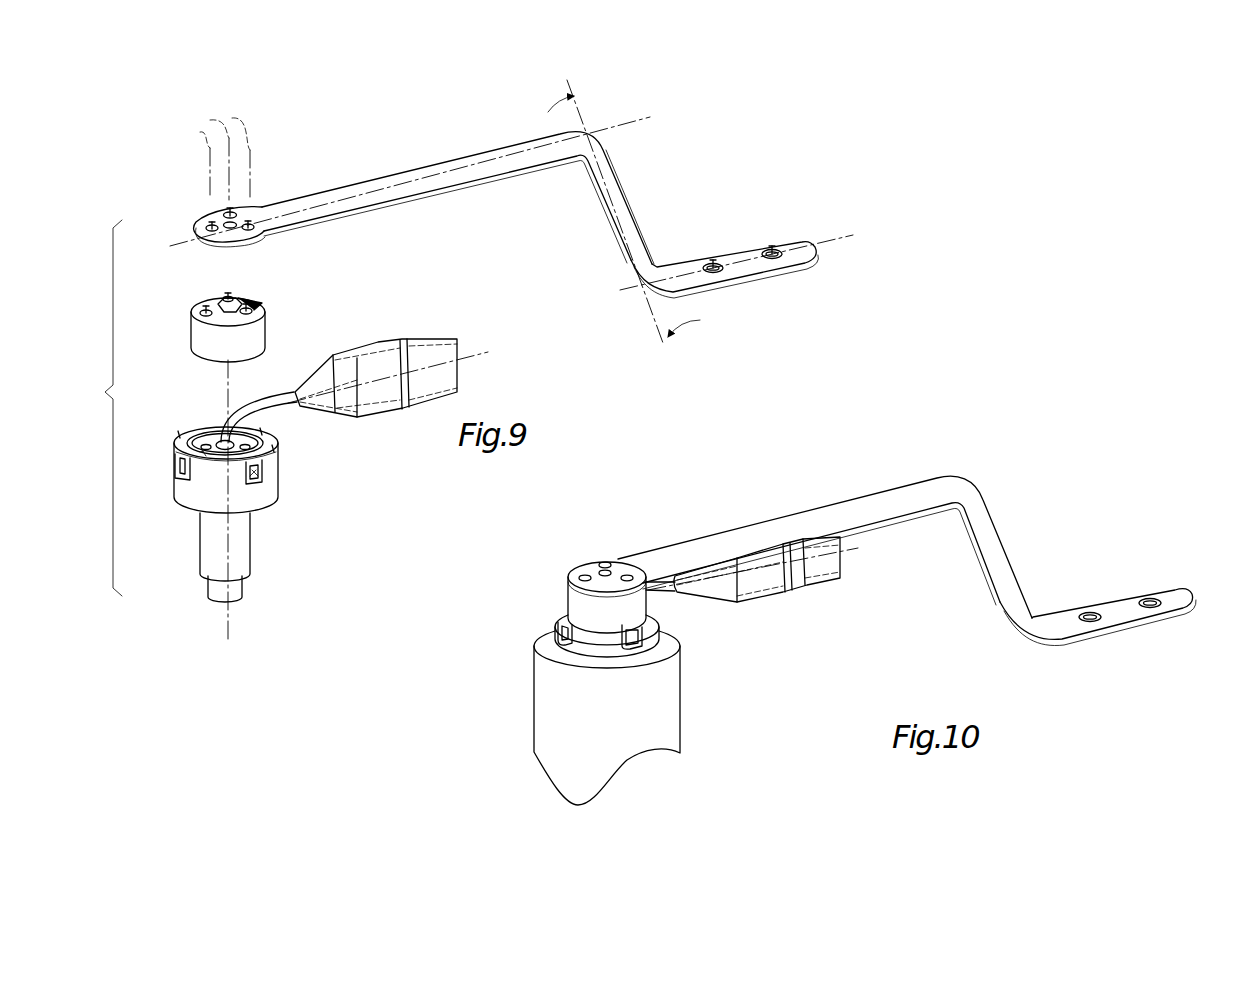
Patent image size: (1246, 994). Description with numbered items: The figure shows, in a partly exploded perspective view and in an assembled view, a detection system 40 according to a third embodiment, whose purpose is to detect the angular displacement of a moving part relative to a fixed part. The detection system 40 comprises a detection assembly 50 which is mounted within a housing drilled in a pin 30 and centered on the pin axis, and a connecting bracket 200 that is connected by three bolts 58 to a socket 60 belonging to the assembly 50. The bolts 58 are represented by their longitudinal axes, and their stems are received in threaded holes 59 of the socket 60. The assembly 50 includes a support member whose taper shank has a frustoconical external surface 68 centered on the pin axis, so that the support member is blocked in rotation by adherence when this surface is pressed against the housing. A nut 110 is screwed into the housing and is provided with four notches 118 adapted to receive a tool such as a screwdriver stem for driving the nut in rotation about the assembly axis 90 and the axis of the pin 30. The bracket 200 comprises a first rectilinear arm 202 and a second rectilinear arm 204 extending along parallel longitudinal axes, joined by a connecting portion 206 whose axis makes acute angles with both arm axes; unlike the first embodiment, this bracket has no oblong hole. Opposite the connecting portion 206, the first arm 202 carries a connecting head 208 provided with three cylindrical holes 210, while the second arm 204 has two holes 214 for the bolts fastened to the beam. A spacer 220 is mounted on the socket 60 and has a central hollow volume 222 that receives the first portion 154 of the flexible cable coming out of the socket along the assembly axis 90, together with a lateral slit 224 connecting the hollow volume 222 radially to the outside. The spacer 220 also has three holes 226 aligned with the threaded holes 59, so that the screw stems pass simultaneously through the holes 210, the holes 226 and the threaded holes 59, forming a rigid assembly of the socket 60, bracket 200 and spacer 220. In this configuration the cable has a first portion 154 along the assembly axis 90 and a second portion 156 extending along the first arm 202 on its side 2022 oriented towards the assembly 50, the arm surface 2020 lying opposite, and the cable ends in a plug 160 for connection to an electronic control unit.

In FIG. 10, the pin 30 is at (567, 729).
In FIG. 9, the detection system 40 is at (100, 408).
In FIG. 9, the detection assembly 50 is at (257, 508).
In FIG. 9, the bolts 58 is at (214, 155).
In FIG. 9, the threaded holes 59 is at (214, 441).
In FIG. 9, the socket 60 is at (221, 443).
In FIG. 9, the external surface 68 is at (240, 592).
In FIG. 9, the axis X90 90 is at (215, 560).
In FIG. 9, the nut 110 is at (190, 482).
In FIG. 10, the nut 110 is at (588, 650).
In FIG. 9, the notches 118 is at (258, 478).
In FIG. 9, the first portion of cable 154 is at (240, 450).
In FIG. 9, the second portion of cable 156 is at (283, 400).
In FIG. 10, the second portion of cable 156 is at (674, 598).
In FIG. 9, the plug 160 is at (392, 422).
In FIG. 10, the plug 160 is at (765, 578).
In FIG. 9, the connecting bracket 200 is at (502, 211).
In FIG. 10, the connecting bracket 200 is at (907, 541).
In FIG. 9, the first rectilinear arm 202 is at (457, 196).
In FIG. 10, the first rectilinear arm 202 is at (825, 532).
In FIG. 9, the second rectilinear arm 204 is at (751, 234).
In FIG. 10, the second rectilinear arm 204 is at (1098, 583).
In FIG. 9, the connecting portion 206 is at (600, 205).
In FIG. 10, the connecting portion 206 is at (985, 549).
In FIG. 9, the connecting head 208 is at (211, 236).
In FIG. 9, the cylindrical holes 210 is at (242, 229).
In FIG. 9, the holes 214 is at (713, 262).
In FIG. 10, the holes 214 is at (1118, 605).
In FIG. 9, the spacer 220 is at (241, 308).
In FIG. 10, the spacer 220 is at (580, 600).
In FIG. 9, the central hollow volume 222 is at (222, 305).
In FIG. 9, the lateral slit 224 is at (263, 304).
In FIG. 9, the holes 226 is at (229, 292).
In FIG. 9, the top surface of arm 2020 is at (490, 155).
In FIG. 10, the top surface of arm 2020 is at (886, 495).
In FIG. 9, the side of first arm 2022 is at (498, 186).
In FIG. 10, the side of first arm 2022 is at (888, 530).